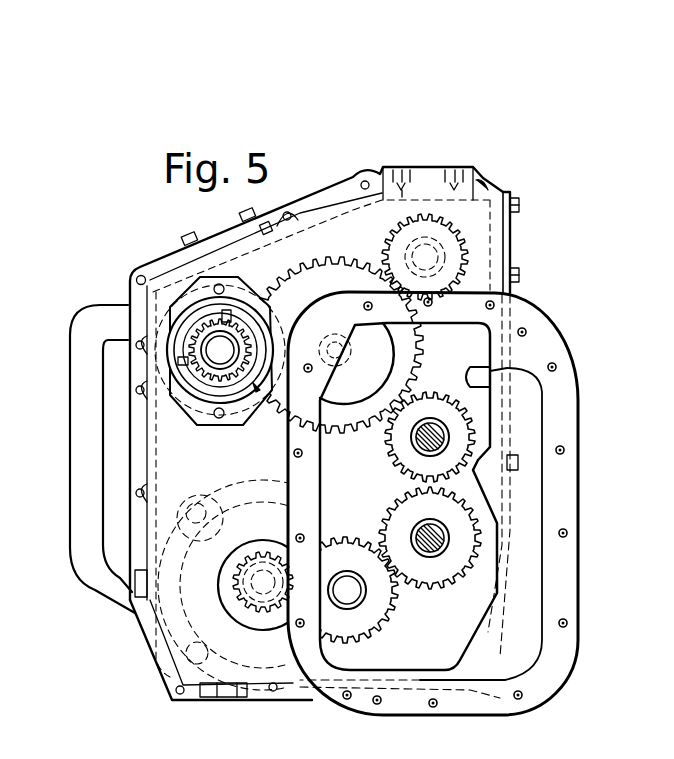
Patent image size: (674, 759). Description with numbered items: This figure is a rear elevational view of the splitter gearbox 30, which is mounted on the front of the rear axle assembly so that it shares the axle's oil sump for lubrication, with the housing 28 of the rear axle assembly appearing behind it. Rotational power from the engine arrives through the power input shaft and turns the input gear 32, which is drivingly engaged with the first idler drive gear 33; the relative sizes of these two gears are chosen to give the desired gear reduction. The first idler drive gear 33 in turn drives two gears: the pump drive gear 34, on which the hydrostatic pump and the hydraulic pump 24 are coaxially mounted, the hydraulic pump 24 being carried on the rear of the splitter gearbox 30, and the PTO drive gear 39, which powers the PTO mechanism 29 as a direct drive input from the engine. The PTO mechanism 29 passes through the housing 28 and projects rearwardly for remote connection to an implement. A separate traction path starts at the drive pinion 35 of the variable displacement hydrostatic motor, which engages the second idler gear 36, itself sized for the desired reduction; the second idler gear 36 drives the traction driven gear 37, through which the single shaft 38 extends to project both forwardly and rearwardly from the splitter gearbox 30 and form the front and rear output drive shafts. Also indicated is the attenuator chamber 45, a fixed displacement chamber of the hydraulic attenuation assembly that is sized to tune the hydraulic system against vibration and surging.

The splitter gearbox 30 is at (531, 92).
The hydraulic pump 24 is at (190, 328).
The pump drive gear 34 is at (196, 340).
The first idler drive gear 33 is at (328, 260).
The input gear 32 is at (452, 220).
The attenuator chamber 45 is at (513, 228).
The PTO drive gear 39 is at (467, 415).
The PTO mechanism 29 is at (447, 433).
The housing 28 is at (578, 474).
The single shaft 38 is at (447, 538).
The traction driven gear 37 is at (463, 582).
The second idler gear 36 is at (392, 592).
The drive pinion 35 is at (240, 601).